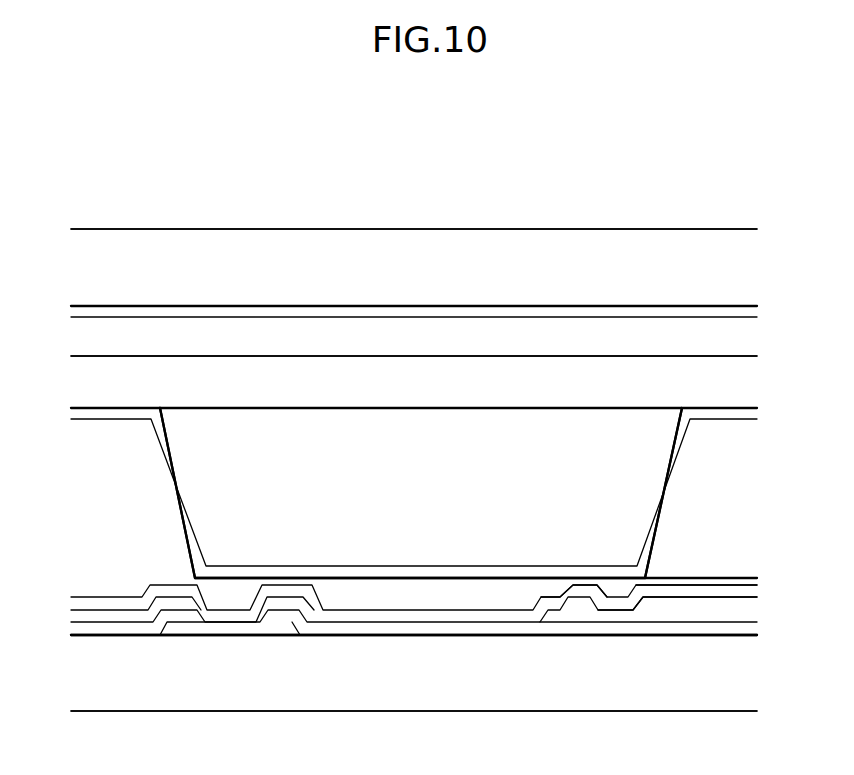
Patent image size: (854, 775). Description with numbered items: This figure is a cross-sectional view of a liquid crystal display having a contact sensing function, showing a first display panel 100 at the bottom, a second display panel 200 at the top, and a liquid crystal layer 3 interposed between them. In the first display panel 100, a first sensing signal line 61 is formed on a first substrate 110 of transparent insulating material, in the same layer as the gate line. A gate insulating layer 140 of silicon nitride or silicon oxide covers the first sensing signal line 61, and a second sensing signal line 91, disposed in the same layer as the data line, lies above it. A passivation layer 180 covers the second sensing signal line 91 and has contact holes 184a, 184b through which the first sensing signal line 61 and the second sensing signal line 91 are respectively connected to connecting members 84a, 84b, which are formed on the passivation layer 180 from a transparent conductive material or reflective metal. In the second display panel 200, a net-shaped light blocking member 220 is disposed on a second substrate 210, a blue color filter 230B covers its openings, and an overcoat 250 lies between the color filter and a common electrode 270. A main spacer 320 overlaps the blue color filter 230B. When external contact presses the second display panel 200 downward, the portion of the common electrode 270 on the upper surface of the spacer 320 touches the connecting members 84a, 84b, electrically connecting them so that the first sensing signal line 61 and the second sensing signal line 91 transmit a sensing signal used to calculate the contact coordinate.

The second display panel 200 is at (760, 229).
The second substrate 210 is at (365, 250).
The light blocking member 220 is at (190, 312).
The blue color filter 230B is at (268, 337).
The overcoat 250 is at (548, 380).
The liquid crystal layer 3 is at (760, 415).
The main spacer 320 is at (465, 437).
The common electrode 270 is at (718, 413).
The first display panel 100 is at (760, 586).
The first substrate 110 is at (112, 695).
The contact hole 184a is at (200, 600).
The first sensing signal line 61 is at (247, 628).
The connecting member 84a is at (285, 590).
The gate insulating layer 140 is at (355, 625).
The passivation layer 180 is at (415, 617).
The connecting member 84b is at (580, 591).
The contact hole 184b is at (633, 598).
The second sensing signal line 91 is at (690, 617).